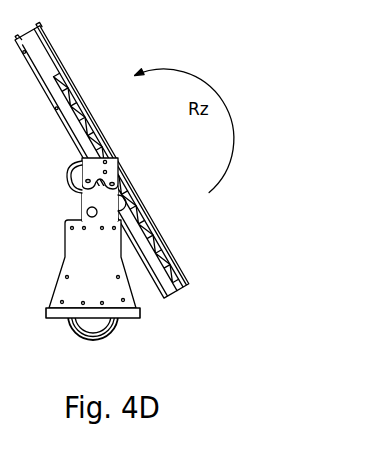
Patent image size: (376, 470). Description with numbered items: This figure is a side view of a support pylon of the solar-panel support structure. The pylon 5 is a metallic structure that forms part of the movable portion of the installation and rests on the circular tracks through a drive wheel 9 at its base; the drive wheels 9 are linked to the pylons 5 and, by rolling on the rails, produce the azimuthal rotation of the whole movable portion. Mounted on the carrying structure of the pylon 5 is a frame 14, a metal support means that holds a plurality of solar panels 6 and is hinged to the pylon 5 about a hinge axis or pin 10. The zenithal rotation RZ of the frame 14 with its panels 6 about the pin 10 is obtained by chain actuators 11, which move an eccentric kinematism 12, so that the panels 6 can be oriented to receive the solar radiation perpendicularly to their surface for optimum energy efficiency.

The pylon 5 is at (62, 315).
The solar panels 6 is at (150, 212).
The drive wheels 9 is at (95, 342).
The hinge axis or pin 10 is at (109, 173).
The chain actuators 11 is at (104, 157).
The eccentric kinematism 12 is at (63, 187).
The frames 14 is at (175, 300).